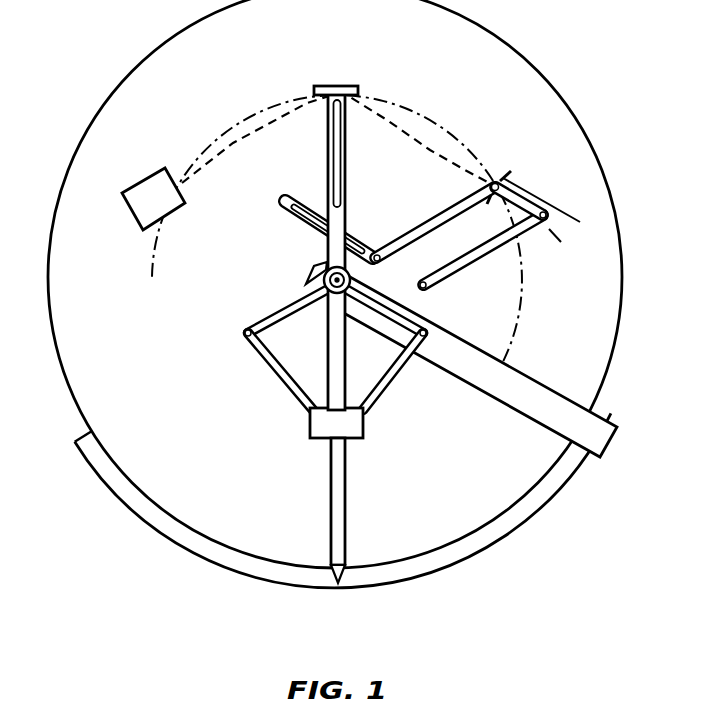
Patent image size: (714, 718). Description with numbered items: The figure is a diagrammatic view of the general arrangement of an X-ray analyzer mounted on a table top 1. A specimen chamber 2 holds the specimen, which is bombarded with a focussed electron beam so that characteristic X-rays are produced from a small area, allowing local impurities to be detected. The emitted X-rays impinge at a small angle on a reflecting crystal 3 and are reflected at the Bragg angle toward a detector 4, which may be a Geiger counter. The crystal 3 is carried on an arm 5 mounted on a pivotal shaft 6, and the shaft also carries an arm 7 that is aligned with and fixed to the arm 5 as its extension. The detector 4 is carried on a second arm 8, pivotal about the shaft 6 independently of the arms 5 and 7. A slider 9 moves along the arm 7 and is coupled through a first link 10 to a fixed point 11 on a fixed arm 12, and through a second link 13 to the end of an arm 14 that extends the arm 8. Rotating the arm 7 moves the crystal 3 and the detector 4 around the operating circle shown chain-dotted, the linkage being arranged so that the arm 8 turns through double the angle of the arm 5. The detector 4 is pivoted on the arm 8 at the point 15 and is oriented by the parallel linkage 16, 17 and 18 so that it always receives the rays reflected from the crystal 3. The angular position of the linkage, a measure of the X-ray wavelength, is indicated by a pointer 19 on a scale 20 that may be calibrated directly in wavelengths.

The table top 1 is at (218, 456).
The specimen chamber 2 is at (143, 180).
The reflecting crystal 3 is at (341, 86).
The detector 4 is at (560, 232).
The arm 5 is at (347, 207).
The pivotal shaft 6 is at (323, 266).
The arm 7 is at (346, 498).
The second arm 8 is at (430, 219).
The slider 9 is at (365, 436).
The first link 10 is at (401, 364).
The fixed point 11 is at (405, 340).
The fixed arm 12 is at (540, 382).
The second link 13 is at (273, 373).
The arm 14 is at (270, 316).
The pivot point 15 is at (495, 183).
The parallel linkage member 16 is at (533, 207).
The parallel linkage member 17 is at (490, 253).
The parallel linkage member 18 is at (408, 267).
The pointer 19 is at (333, 582).
The scale 20 is at (486, 569).